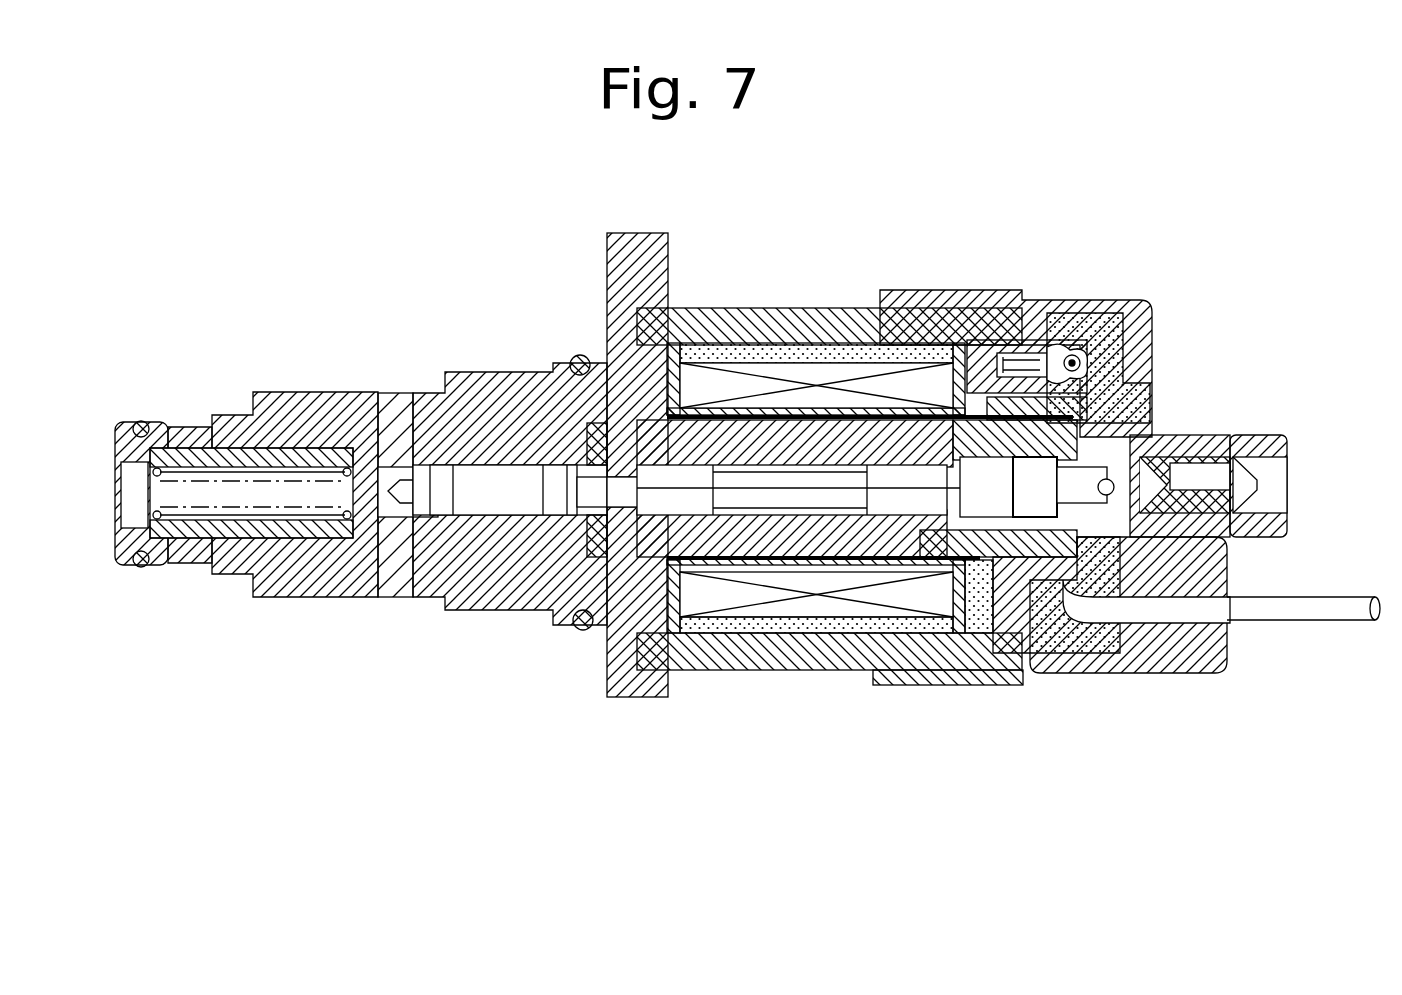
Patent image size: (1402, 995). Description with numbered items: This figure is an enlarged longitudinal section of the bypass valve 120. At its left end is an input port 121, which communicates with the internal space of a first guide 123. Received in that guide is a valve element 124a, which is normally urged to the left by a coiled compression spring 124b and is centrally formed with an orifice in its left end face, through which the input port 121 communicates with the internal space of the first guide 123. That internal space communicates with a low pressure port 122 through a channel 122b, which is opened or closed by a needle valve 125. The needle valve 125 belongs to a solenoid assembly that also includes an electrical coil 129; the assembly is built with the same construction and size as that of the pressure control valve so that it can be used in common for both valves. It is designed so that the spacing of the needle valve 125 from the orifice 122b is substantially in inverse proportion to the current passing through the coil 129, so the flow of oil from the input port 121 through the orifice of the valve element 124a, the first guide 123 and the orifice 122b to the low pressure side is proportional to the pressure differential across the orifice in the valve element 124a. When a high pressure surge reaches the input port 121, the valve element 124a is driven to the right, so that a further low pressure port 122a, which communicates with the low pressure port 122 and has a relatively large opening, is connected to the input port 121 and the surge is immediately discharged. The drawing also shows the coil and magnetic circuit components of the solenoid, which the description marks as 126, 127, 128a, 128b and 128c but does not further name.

The bypass valve 120 is at (913, 262).
The input port 121 is at (135, 499).
The low pressure port 122 is at (393, 575).
The low pressure port 122a is at (190, 552).
The channel (orifice) 122b is at (387, 487).
The first guide 123 is at (236, 432).
The valve element 124a is at (243, 530).
The coiled compression spring 124b is at (315, 472).
The needle valve 125 is at (490, 496).
The lower coil 126 is at (775, 525).
The core 127 is at (985, 680).
The yoke 128a is at (706, 655).
The housing 128b is at (1017, 623).
The nut 128c is at (1286, 484).
The electrical coil 129 is at (808, 380).